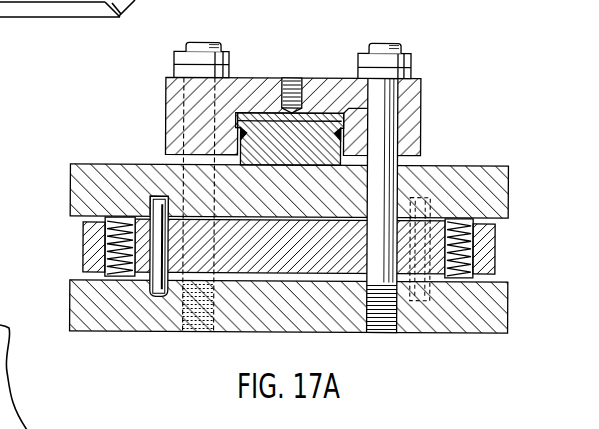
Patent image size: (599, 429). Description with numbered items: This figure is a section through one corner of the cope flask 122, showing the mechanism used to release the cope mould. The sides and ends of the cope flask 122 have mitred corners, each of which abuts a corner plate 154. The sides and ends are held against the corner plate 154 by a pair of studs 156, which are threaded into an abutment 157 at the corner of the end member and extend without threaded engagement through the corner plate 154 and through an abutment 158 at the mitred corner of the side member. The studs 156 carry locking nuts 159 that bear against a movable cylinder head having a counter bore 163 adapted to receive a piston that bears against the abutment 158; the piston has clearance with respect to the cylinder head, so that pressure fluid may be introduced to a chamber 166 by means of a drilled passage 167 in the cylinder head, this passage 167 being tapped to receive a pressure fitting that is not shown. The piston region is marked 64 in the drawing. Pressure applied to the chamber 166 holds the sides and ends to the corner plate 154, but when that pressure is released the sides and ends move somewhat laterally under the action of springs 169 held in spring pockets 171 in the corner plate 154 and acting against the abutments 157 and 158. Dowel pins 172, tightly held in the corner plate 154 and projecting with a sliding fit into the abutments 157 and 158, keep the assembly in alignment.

The cope flask 122 is at (483, 102).
The corner plate 154 is at (485, 273).
The stud 156 is at (462, 148).
The abutment 157 is at (245, 332).
The abutment 158 is at (98, 165).
The locking nut 159 is at (227, 55).
The counter bore 163 is at (340, 113).
The seal groove 64 is at (340, 153).
The chamber 166 is at (332, 80).
The drilled passage 167 is at (297, 88).
The spring 169 is at (105, 232).
The spring pocket 171 is at (83, 262).
The dowel pin 172 is at (157, 197).